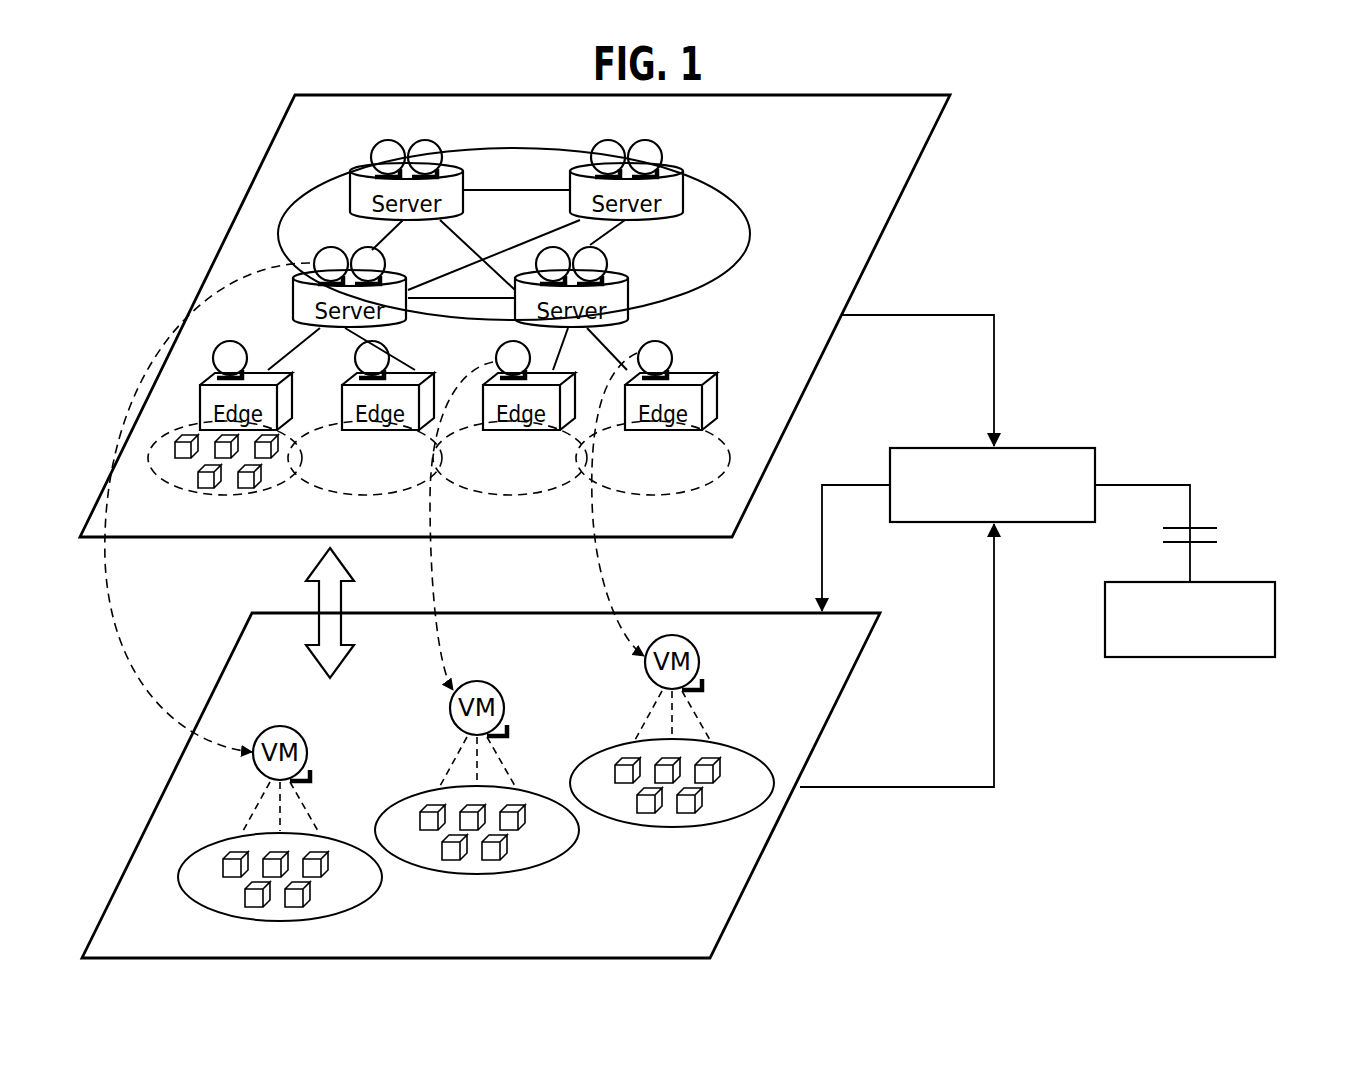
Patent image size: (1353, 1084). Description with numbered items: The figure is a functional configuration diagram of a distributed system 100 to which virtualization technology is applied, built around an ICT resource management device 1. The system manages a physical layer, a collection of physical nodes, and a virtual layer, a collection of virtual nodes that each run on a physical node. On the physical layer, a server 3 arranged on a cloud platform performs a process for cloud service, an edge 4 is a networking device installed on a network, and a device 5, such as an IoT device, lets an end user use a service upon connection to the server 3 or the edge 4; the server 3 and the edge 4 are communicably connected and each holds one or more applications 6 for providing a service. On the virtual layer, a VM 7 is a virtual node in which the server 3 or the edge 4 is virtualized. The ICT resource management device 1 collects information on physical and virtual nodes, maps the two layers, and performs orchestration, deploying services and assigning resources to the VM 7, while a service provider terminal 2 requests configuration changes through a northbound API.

The distributed system 100 is at (1032, 108).
The ICT resource management device 1 is at (965, 448).
The service provider terminal 2 is at (1276, 616).
The server 3 is at (352, 166).
The edge 4 is at (293, 393).
The device 5 is at (200, 485).
The application 6 is at (380, 142).
The VM 7 is at (308, 752).